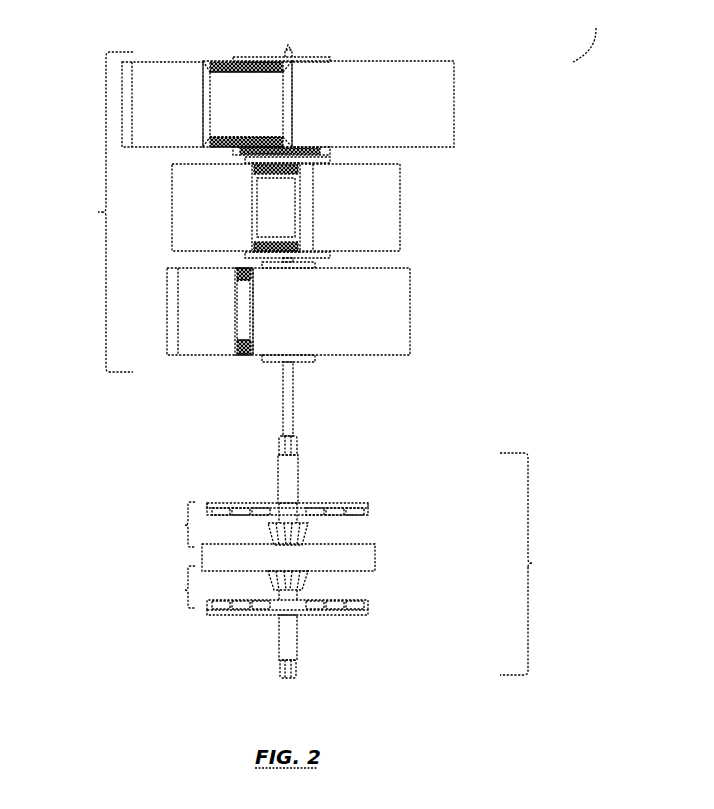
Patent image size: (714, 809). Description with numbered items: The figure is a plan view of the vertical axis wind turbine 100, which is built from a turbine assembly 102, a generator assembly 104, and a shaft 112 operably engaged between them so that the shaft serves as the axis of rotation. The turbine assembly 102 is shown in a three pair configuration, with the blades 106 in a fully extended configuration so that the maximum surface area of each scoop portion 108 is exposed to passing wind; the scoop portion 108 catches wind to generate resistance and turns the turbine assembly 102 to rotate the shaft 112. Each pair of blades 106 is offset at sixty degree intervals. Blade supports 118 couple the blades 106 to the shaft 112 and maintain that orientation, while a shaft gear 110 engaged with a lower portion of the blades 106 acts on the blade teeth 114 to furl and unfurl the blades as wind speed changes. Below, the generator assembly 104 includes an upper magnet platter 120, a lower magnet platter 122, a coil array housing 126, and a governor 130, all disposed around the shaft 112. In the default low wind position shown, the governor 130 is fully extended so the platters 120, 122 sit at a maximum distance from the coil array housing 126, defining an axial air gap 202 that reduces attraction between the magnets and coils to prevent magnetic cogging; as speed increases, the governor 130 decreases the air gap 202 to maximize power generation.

The vertical axis wind turbine 100 is at (589, 32).
The turbine assembly 102 is at (98, 212).
The generator assembly 104 is at (532, 563).
The blades 106 is at (420, 113).
The scoop portion 108 is at (178, 92).
The shaft gear 110 is at (327, 152).
The shaft 112 is at (291, 401).
The blade teeth 114 is at (305, 248).
The blade support 118 is at (320, 56).
The upper magnet platter 120 is at (290, 476).
The lower magnet platter 122 is at (300, 621).
The coil array housing 126 is at (355, 562).
The governor 130 is at (300, 536).
The axial air gap 202 is at (183, 590).